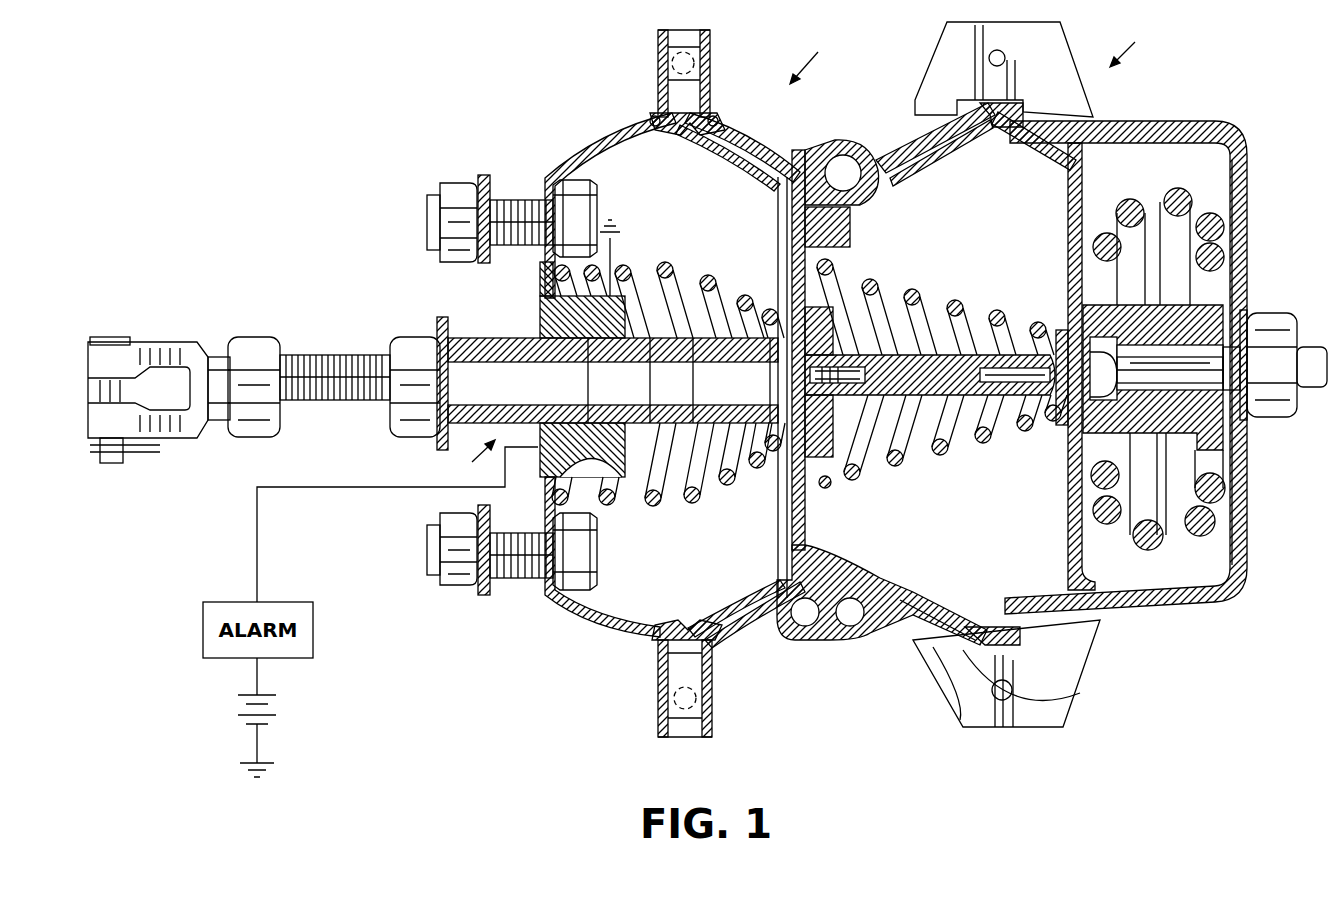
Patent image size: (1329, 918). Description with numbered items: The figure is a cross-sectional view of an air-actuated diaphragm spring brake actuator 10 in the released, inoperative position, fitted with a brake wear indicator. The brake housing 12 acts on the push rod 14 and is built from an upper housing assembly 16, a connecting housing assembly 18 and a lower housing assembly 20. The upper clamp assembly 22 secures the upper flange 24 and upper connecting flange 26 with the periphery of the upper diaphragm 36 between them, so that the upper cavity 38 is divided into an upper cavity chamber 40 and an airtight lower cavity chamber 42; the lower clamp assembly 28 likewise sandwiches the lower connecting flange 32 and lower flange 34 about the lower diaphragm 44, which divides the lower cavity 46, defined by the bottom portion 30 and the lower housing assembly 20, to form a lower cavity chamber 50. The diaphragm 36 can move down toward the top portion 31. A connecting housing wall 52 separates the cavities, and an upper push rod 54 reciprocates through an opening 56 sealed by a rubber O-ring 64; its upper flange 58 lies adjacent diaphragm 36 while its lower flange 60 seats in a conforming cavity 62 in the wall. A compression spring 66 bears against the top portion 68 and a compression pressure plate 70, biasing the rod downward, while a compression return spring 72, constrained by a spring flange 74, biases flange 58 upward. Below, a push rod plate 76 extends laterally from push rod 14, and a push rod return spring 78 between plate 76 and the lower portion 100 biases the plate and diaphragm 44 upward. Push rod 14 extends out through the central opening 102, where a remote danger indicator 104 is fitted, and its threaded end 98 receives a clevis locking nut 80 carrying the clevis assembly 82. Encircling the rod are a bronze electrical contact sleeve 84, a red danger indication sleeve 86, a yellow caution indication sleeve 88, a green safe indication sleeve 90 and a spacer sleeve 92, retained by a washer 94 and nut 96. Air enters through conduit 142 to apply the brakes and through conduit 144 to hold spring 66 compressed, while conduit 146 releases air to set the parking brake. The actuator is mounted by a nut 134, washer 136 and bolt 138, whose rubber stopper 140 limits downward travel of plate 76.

The air-actuated diaphragm spring brake actuator 10 is at (814, 55).
The brake housing 12 is at (1135, 41).
The push rod 14 is at (468, 360).
The upper housing assembly 16 is at (1258, 148).
The connecting housing assembly 18 is at (885, 120).
The lower housing assembly 20 is at (623, 364).
The upper clamp assembly 22 is at (1030, 112).
The upper flange 24 is at (1083, 693).
The upper connecting flange 26 is at (950, 717).
The lower clamp assembly 28 is at (715, 62).
The bottom portion 30 is at (768, 153).
The top portion 31 is at (920, 150).
The lower connecting flange 32 is at (716, 122).
The lower flange 34 is at (652, 120).
The upper diaphragm 36 is at (1068, 202).
The upper cavity 38 is at (939, 243).
The upper cavity chamber 40 is at (1169, 183).
The lower cavity chamber 42 is at (939, 185).
The lower diaphragm 44 is at (765, 172).
The lower cavity 46 is at (652, 210).
The lower cavity chamber 50 is at (667, 241).
The connecting housing wall 52 is at (818, 233).
The upper push rod 54 is at (1007, 395).
The opening 56 is at (882, 428).
The upper flange 58 is at (1052, 322).
The lower flange 60 is at (776, 375).
The conforming cavity 62 is at (835, 480).
The rubber O-ring 64 is at (840, 348).
The compression spring 66 is at (1158, 358).
The top portion 68 is at (1248, 222).
The compression pressure plate 70 is at (1102, 200).
The compression return spring 72 is at (937, 458).
The spring flange 74 is at (845, 537).
The push rod plate 76 is at (778, 528).
The push rod return spring 78 is at (637, 485).
The clevis locking nut 80 is at (258, 340).
The clevis assembly 82 is at (178, 343).
The electrical contact sleeve 84 is at (669, 300).
The danger indication sleeve 86 is at (700, 296).
The caution indication sleeve 88 is at (627, 284).
The safe indication sleeve 90 is at (578, 372).
The spacer sleeve 92 is at (500, 372).
The washer 94 is at (437, 450).
The nut 96 is at (392, 427).
The threaded end 98 is at (340, 358).
The lower portion 100 is at (545, 252).
The central opening 102 is at (540, 298).
The remote danger indicator 104 is at (469, 463).
The nut 134 is at (440, 193).
The washer 136 is at (482, 177).
The bolt 138 is at (516, 198).
The rubber stopper 140 is at (598, 576).
The conduit 142 is at (805, 627).
The conduit 144 is at (843, 155).
The conduit 146 is at (851, 627).